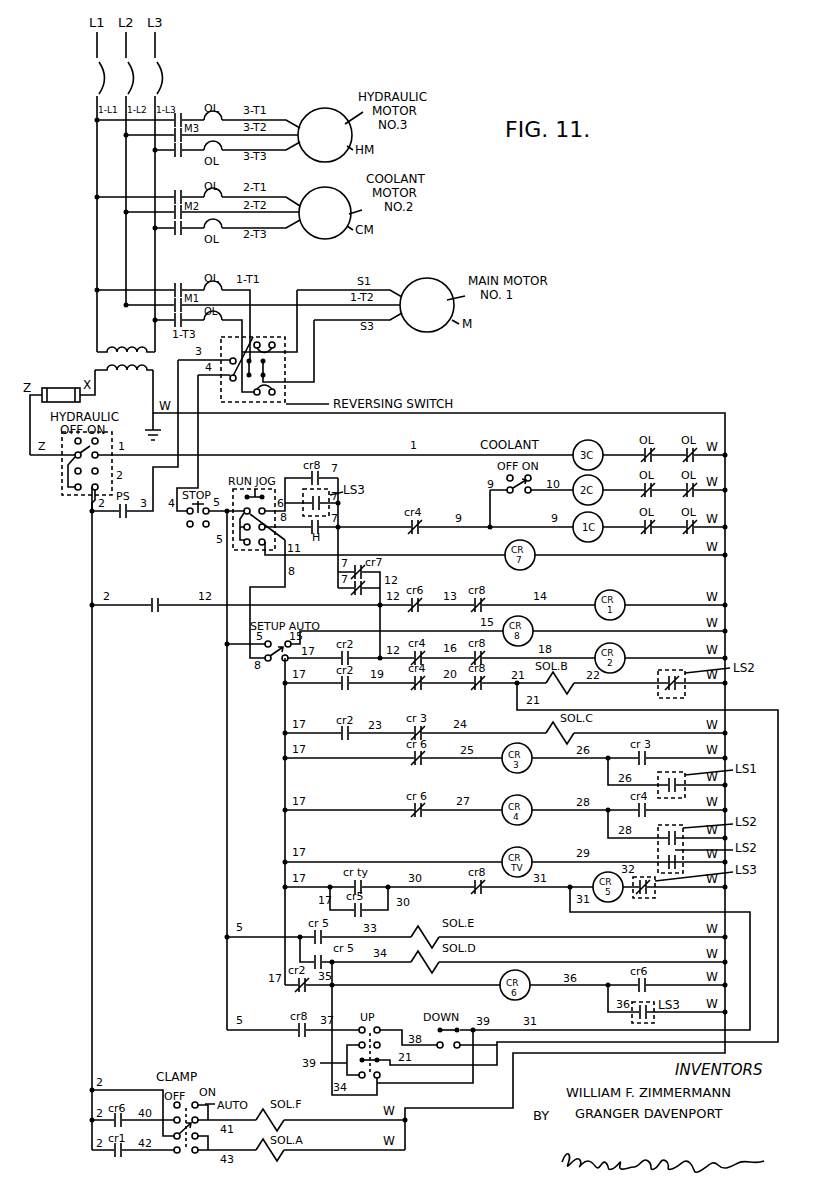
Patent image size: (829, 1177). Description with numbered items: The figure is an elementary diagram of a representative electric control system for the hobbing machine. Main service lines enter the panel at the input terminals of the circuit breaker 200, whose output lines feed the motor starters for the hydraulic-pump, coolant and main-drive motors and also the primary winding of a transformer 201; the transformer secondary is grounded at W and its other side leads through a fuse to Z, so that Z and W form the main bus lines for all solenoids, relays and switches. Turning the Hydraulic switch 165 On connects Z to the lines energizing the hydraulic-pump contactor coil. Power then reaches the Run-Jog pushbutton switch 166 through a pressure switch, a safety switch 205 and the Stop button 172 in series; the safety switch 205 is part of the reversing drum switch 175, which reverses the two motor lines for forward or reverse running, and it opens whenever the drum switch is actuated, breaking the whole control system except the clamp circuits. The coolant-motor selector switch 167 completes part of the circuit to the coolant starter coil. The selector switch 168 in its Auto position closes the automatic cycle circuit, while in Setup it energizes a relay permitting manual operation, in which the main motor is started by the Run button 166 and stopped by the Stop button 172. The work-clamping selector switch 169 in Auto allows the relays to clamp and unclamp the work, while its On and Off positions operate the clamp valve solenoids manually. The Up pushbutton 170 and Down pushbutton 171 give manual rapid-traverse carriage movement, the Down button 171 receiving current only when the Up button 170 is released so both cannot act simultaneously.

The circuit breaker 200 is at (192, 72).
The transformer 201 is at (125, 349).
The safety switch 205 is at (246, 352).
The reversing drum switch 175 is at (286, 399).
The Hydraulic switch 165 is at (71, 471).
The Stop button 172 is at (191, 502).
The Run-Jog pushbutton switch 166 is at (259, 506).
The coolant-motor selector switch 167 is at (519, 492).
The selector switch 168 is at (275, 612).
The work-clamping selector switch 169 is at (189, 1103).
The Up pushbutton 170 is at (376, 1027).
The Down pushbutton 171 is at (463, 1025).